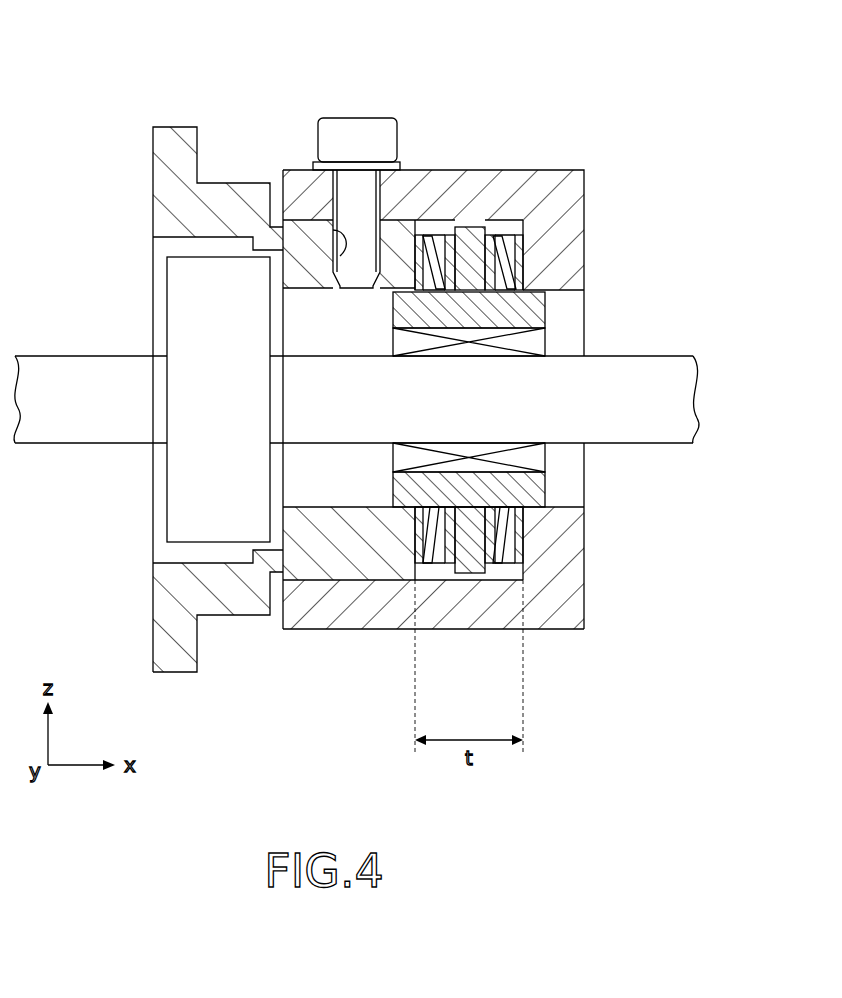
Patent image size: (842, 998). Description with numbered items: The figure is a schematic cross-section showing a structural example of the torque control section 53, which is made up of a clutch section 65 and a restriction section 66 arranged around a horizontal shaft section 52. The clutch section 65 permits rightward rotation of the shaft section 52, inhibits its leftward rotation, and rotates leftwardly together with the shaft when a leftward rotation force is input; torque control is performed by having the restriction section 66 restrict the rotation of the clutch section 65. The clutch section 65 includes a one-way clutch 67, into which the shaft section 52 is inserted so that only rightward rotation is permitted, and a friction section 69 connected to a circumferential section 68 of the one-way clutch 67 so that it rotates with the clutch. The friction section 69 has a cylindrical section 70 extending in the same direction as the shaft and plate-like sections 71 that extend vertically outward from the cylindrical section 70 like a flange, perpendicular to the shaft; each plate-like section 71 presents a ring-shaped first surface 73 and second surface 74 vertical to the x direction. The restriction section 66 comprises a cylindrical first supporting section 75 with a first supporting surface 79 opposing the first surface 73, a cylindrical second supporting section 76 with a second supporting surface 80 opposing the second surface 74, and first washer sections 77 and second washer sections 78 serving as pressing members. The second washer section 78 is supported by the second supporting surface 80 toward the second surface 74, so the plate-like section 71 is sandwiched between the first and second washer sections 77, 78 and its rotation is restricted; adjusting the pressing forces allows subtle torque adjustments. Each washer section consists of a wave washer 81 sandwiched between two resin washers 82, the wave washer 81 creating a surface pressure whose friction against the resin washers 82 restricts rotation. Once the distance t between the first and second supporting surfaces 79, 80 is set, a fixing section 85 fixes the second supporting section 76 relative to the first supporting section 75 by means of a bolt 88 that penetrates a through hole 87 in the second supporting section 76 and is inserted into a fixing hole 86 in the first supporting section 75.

The shaft section 52 is at (668, 368).
The torque control section 53 is at (530, 100).
The clutch section 65 is at (527, 389).
The restriction section 66 is at (290, 160).
The one-way clutch 67 is at (545, 343).
The circumferential section 68 is at (540, 312).
The friction section 69 is at (556, 489).
The cylindrical section 70 is at (402, 311).
The plate-like sections 71 is at (466, 323).
The first surface 73 is at (438, 238).
The second surface 74 is at (507, 240).
The first supporting section 75 is at (178, 127).
The second supporting section 76 is at (570, 212).
The first washer sections 77 is at (423, 582).
The second washer sections 78 is at (493, 582).
The first supporting surface 79 is at (431, 218).
The second supporting surface 80 is at (512, 212).
The wave washer 81 is at (497, 547).
The resin washers 82 is at (500, 530).
The fixing section 85 is at (346, 110).
The fixing hole 86 is at (340, 228).
The through hole 87 is at (336, 246).
The bolt 88 is at (372, 125).